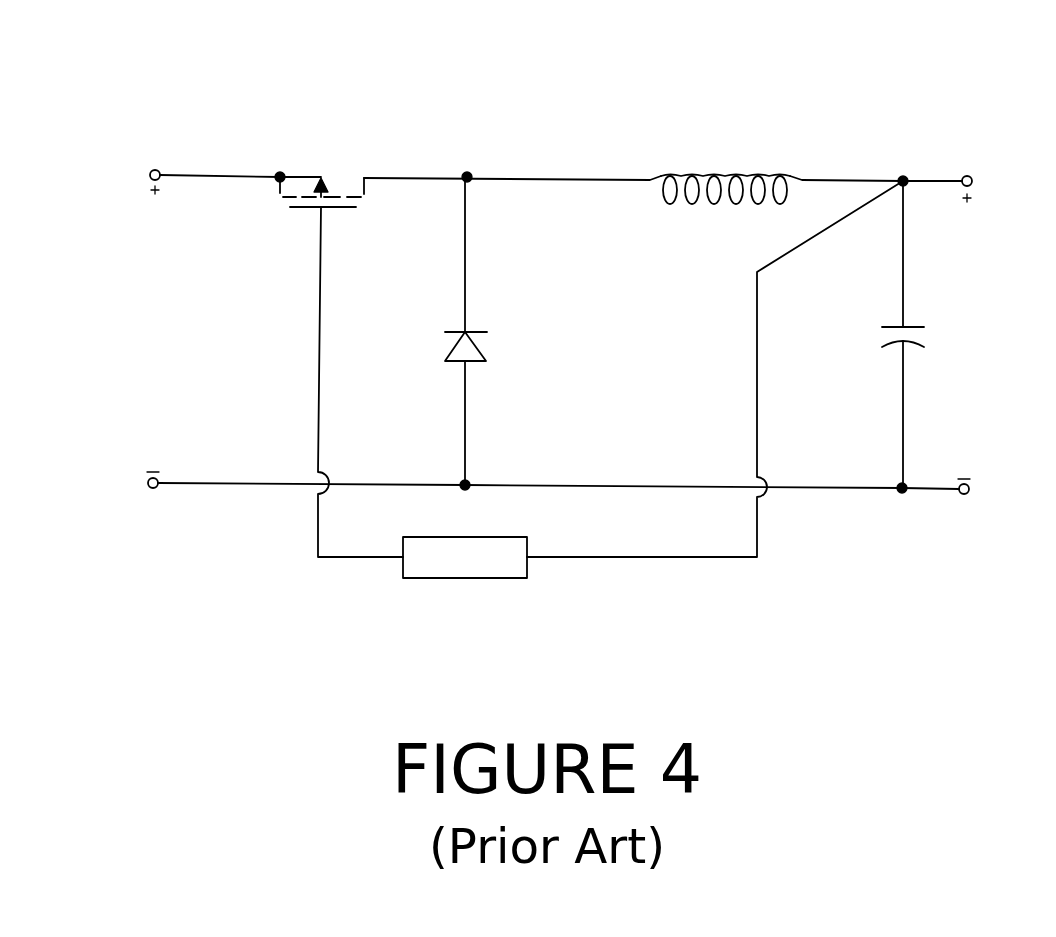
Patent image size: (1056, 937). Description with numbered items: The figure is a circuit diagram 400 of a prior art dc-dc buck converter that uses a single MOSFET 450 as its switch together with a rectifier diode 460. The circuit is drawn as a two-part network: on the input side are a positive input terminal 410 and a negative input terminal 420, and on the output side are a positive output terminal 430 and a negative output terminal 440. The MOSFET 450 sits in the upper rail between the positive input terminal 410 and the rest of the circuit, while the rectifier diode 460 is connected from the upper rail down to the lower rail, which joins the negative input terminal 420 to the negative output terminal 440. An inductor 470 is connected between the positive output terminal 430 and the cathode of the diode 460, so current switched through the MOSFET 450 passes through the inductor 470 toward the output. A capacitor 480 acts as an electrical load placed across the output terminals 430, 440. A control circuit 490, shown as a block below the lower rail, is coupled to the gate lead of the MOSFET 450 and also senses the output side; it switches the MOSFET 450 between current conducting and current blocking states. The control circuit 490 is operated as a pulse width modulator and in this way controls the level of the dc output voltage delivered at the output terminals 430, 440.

The circuit diagram 400 is at (50, 55).
The positive input terminal 410 is at (153, 170).
The negative input terminal 420 is at (149, 489).
The positive output terminal 430 is at (971, 177).
The negative output terminal 440 is at (965, 494).
The MOSFET 450 is at (320, 172).
The rectifier diode 460 is at (477, 362).
The inductor 470 is at (682, 164).
The capacitor 480 is at (930, 332).
The control circuit 490 is at (503, 578).